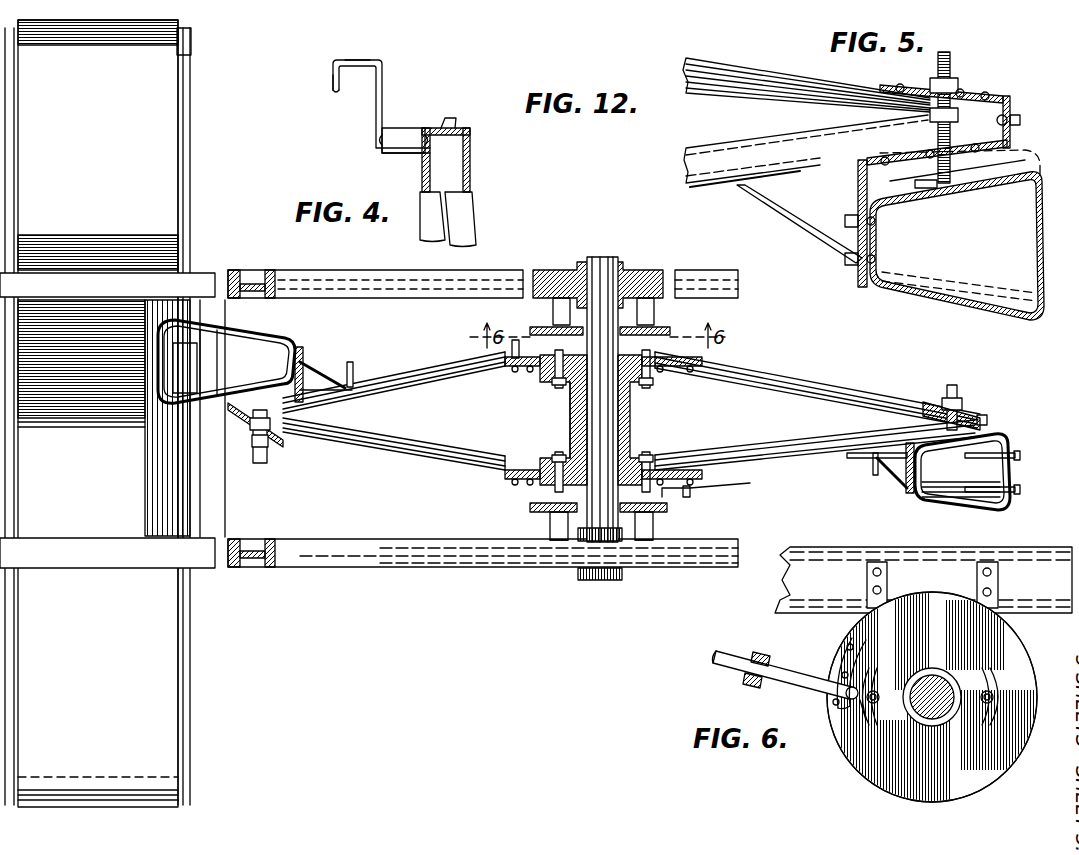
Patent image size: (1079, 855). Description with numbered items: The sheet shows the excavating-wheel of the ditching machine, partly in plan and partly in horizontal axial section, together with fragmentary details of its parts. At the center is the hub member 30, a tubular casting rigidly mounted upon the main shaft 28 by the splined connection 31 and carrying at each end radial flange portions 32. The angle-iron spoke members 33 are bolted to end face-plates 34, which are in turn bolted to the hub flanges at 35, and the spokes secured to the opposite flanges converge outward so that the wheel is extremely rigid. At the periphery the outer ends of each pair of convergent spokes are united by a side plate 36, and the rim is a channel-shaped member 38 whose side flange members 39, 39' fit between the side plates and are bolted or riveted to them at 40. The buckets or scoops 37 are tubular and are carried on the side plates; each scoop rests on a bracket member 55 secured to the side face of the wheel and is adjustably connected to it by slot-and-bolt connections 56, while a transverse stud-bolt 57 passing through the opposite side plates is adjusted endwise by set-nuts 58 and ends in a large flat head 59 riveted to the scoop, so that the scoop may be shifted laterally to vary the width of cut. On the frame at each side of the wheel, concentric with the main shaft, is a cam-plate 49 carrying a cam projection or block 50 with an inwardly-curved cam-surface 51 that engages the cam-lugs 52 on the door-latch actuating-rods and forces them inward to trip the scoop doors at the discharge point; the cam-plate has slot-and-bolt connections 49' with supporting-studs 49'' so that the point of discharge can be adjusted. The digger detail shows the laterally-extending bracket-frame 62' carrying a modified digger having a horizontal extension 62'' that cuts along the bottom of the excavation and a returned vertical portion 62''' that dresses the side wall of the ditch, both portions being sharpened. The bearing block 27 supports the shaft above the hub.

In FIG. 4, the bearing block 27 is at (560, 270).
In FIG. 4, the main shaft 28 is at (603, 262).
In FIG. 4, the hub member 30 is at (572, 423).
In FIG. 4, the splined mounting 31 is at (583, 365).
In FIG. 4, the radial flange portions 32 is at (660, 390).
In FIG. 4, the spoke members 33 is at (420, 390).
In FIG. 5, the spoke members 33 is at (857, 191).
In FIG. 4, the end face-plates 34 is at (520, 486).
In FIG. 4, the bolts 35 is at (556, 458).
In FIG. 5, the side plate 36 is at (907, 88).
In FIG. 4, the buckets or scoops 37 is at (255, 324).
In FIG. 5, the buckets or scoops 37 is at (1045, 250).
In FIG. 4, the channel-shaped member 38 is at (772, 386).
In FIG. 12, the channel-shaped member 38 is at (450, 120).
In FIG. 5, the channel-shaped member 38 is at (1008, 108).
In FIG. 5, the side flange member 39 is at (984, 125).
In FIG. 5, the side flange member 39' is at (1030, 133).
In FIG. 5, the bolts or rivets 40 is at (990, 92).
In FIG. 4, the cam-plate 49 is at (582, 527).
In FIG. 6, the cam-plate 49 is at (917, 700).
In FIG. 6, the slot-and-bolt connections 49' is at (966, 688).
In FIG. 4, the supporting-studs 49'' is at (613, 430).
In FIG. 4, the cam projection or block 50 is at (533, 505).
In FIG. 6, the cam projection or block 50 is at (843, 657).
In FIG. 6, the cam-surface 51 is at (862, 656).
In FIG. 4, the cam-lugs 52 is at (545, 328).
In FIG. 6, the cam-lugs 52 is at (865, 718).
In FIG. 4, the bracket member 55 is at (310, 362).
In FIG. 5, the slot-and-bolt connections 56 is at (850, 252).
In FIG. 5, the transverse stud-bolt 57 is at (975, 183).
In FIG. 5, the set-nuts 58 is at (952, 82).
In FIG. 5, the head 59 is at (935, 195).
In FIG. 12, the bracket-frame 62' is at (384, 106).
In FIG. 12, the horizontal extension 62'' is at (363, 82).
In FIG. 12, the vertical portion 62''' is at (309, 89).